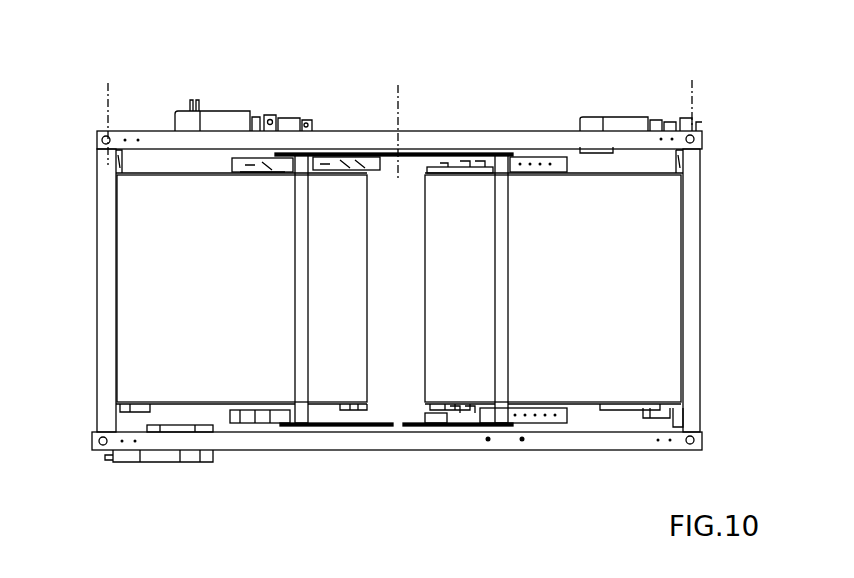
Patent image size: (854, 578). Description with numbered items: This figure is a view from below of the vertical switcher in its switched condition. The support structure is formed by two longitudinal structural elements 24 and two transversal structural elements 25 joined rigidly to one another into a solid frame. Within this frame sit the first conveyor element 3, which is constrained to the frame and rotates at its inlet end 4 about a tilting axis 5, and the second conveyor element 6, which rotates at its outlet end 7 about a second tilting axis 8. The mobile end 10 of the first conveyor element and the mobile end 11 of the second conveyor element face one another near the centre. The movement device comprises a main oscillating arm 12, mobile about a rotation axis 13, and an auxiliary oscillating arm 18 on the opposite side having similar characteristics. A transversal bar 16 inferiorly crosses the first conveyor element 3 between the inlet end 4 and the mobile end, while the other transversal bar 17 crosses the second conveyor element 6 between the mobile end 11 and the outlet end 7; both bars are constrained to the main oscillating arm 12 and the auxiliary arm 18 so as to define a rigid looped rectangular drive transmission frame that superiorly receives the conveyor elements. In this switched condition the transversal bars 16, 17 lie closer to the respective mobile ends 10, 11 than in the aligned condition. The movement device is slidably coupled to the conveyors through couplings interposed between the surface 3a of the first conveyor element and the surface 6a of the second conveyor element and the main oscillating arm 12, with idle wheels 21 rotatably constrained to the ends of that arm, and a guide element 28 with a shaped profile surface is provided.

The first conveyor element 3 is at (205, 233).
The surface of the first conveyor element 3a is at (235, 412).
The inlet end 4 is at (130, 337).
The tilting axis 5 is at (107, 96).
The second conveyor element 6 is at (589, 228).
The surface of the second conveyor element 6a is at (560, 413).
The outlet end 7 is at (672, 248).
The second tilting axis 8 is at (692, 90).
The mobile end of the first conveyor element 10 is at (367, 383).
The mobile end of the second conveyor element 11 is at (425, 190).
The main oscillating arm 12 is at (337, 153).
The rotation axis 13 is at (398, 90).
The transversal bar 16 is at (303, 337).
The transversal bar 17 is at (500, 345).
The auxiliary oscillating arm 18 is at (437, 427).
The wheels 21 is at (284, 152).
The longitudinal structural elements 24 is at (525, 131).
The transversal structural elements 25 is at (102, 257).
The guide element 28 is at (253, 163).